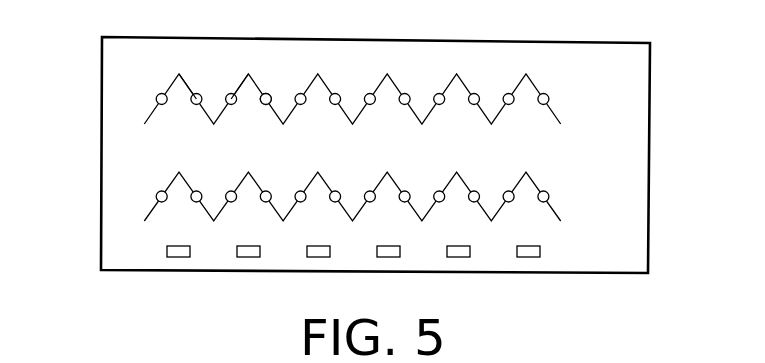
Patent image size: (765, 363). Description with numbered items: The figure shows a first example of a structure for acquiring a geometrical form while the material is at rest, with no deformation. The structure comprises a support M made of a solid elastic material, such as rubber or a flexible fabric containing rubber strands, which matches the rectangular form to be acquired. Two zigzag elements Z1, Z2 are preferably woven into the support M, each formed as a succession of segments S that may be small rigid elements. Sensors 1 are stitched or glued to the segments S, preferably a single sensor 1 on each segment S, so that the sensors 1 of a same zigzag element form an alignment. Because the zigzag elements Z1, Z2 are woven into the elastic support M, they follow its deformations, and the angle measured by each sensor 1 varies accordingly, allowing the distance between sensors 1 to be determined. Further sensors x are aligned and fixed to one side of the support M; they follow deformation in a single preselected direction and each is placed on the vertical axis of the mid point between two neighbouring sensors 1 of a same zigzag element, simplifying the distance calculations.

The support M is at (637, 190).
The zigzag element Z1 is at (150, 82).
The zigzag element Z2 is at (150, 184).
The segment S is at (241, 80).
The sensor 1 is at (270, 96).
The sensor x is at (247, 250).